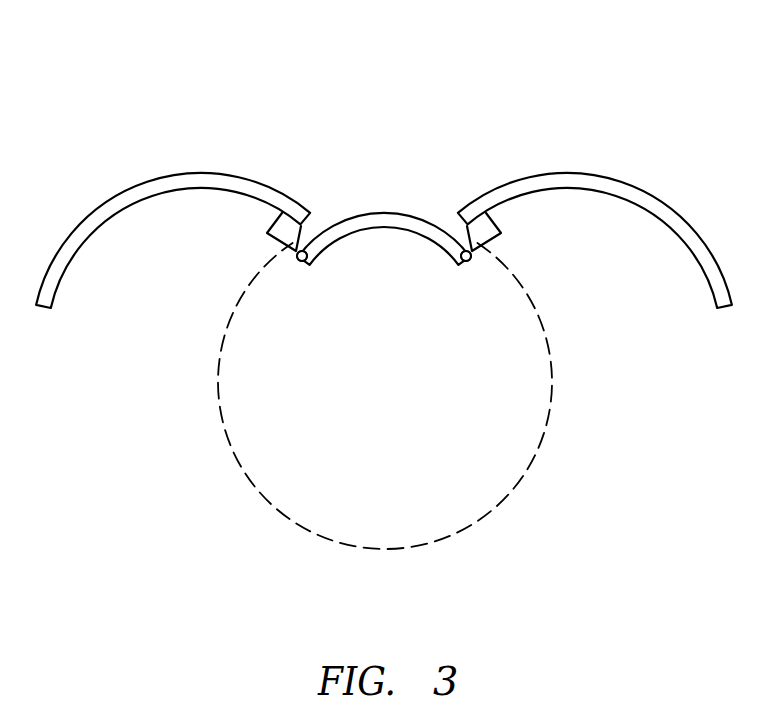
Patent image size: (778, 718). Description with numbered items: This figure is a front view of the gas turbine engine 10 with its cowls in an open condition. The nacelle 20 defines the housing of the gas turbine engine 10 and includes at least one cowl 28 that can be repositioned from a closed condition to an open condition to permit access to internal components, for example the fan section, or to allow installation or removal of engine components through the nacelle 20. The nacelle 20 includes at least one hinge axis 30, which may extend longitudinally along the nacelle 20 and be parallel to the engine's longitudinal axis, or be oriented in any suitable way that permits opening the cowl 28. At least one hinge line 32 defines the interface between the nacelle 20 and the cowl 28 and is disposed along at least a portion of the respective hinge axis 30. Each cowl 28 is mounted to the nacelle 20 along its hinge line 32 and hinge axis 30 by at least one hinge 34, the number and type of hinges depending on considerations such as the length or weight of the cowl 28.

The gas turbine engine 10 is at (491, 101).
The nacelle 20 is at (413, 215).
The cowl 28 is at (168, 176).
The hinge axis 30 is at (317, 271).
The hinge line 32 is at (299, 261).
The hinge 34 is at (268, 240).